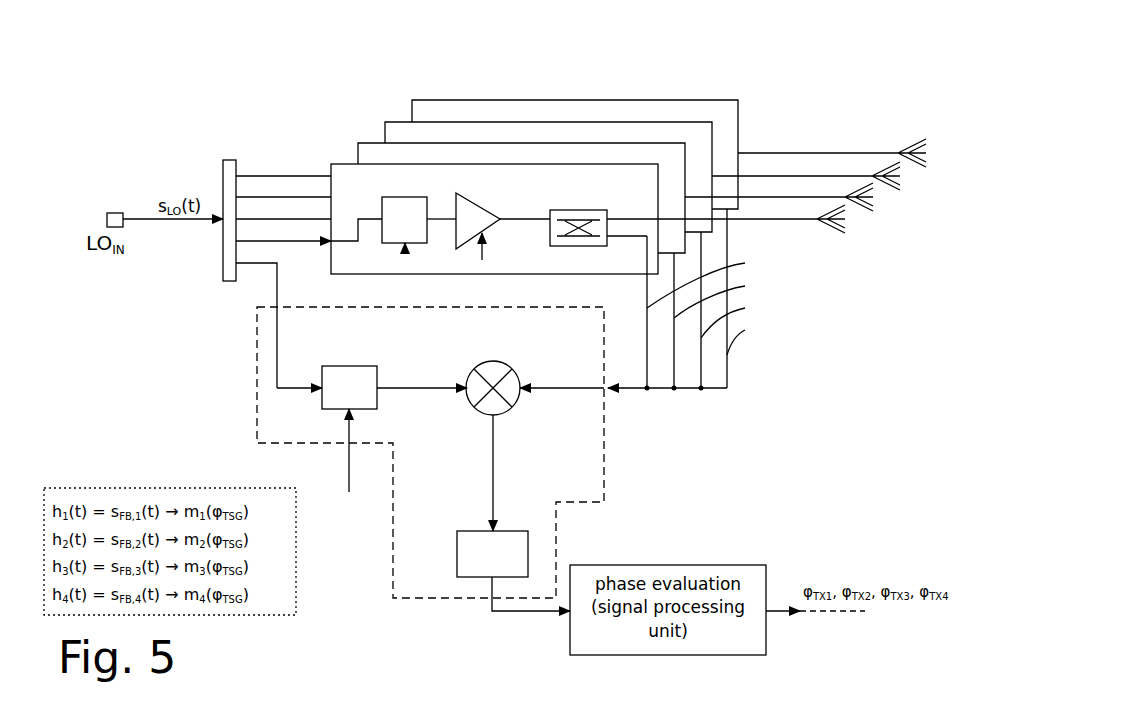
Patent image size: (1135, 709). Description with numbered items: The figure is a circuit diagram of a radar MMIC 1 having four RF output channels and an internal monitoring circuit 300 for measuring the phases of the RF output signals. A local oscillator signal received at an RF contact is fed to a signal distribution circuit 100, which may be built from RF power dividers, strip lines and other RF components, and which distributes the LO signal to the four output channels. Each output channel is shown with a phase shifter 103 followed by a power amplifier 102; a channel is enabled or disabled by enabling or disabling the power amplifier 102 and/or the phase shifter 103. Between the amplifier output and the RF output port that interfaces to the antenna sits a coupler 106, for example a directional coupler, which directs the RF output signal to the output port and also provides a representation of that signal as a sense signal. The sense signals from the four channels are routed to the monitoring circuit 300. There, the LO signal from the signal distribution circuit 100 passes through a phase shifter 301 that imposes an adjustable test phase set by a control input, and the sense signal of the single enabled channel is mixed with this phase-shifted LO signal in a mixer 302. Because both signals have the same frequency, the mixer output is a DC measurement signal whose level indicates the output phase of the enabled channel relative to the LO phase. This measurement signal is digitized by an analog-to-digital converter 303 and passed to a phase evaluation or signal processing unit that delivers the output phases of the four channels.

The MMIC 1 is at (730, 62).
The signal distribution circuit 100 is at (232, 160).
The power amplifier 102 is at (483, 209).
The phase shifter 103 is at (440, 192).
The coupler 106 is at (567, 210).
The monitoring circuit 300 is at (257, 388).
The phase shifter 301 is at (355, 366).
The mixer 302 is at (511, 365).
The analog-to-digital converter 303 is at (457, 548).